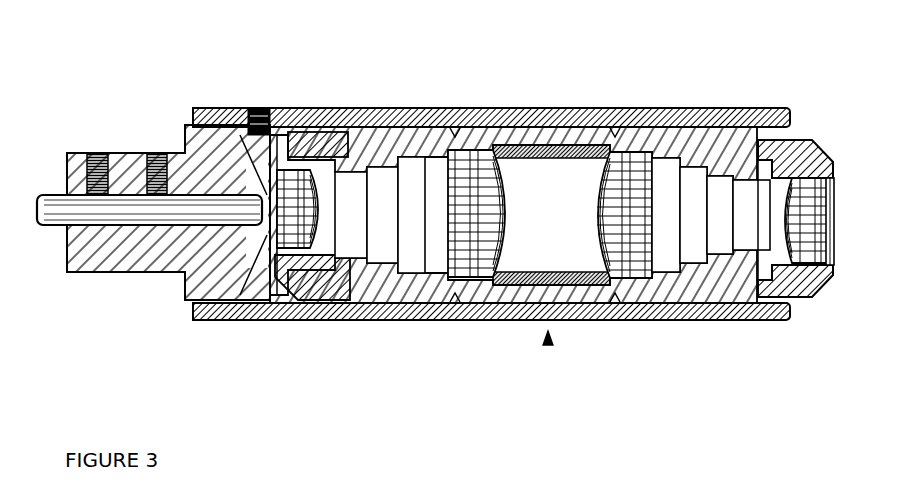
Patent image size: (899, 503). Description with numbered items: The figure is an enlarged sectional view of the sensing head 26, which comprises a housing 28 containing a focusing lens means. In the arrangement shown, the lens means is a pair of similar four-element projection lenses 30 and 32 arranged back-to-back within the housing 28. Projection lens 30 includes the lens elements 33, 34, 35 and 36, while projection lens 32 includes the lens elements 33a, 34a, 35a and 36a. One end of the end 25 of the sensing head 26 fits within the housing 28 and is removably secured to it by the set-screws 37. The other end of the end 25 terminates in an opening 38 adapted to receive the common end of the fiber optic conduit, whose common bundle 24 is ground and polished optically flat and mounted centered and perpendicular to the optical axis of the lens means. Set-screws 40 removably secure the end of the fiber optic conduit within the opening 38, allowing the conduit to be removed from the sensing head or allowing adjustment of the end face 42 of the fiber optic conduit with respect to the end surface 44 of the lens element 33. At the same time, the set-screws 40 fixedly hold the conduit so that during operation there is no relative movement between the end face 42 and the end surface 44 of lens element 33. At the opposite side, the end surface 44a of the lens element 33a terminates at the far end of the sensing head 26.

The common bundle 24 is at (55, 195).
The end 25 is at (162, 271).
The sensing head 26 is at (549, 345).
The housing 28 is at (433, 110).
The projection lens 30 is at (388, 133).
The projection lens 32 is at (583, 115).
The lens element 33 is at (300, 132).
The lens element 33a is at (835, 252).
The lens element 34 is at (323, 220).
The lens element 34a is at (790, 225).
The lens element 35 is at (457, 220).
The lens element 35a is at (655, 207).
The lens element 36 is at (500, 213).
The lens element 36a is at (602, 222).
The set-screws 37 is at (258, 108).
The opening 38 is at (93, 200).
The set-screws 40 is at (99, 153).
The end face 42 is at (240, 135).
The end surface 44 is at (270, 290).
The end surface 44a is at (833, 207).